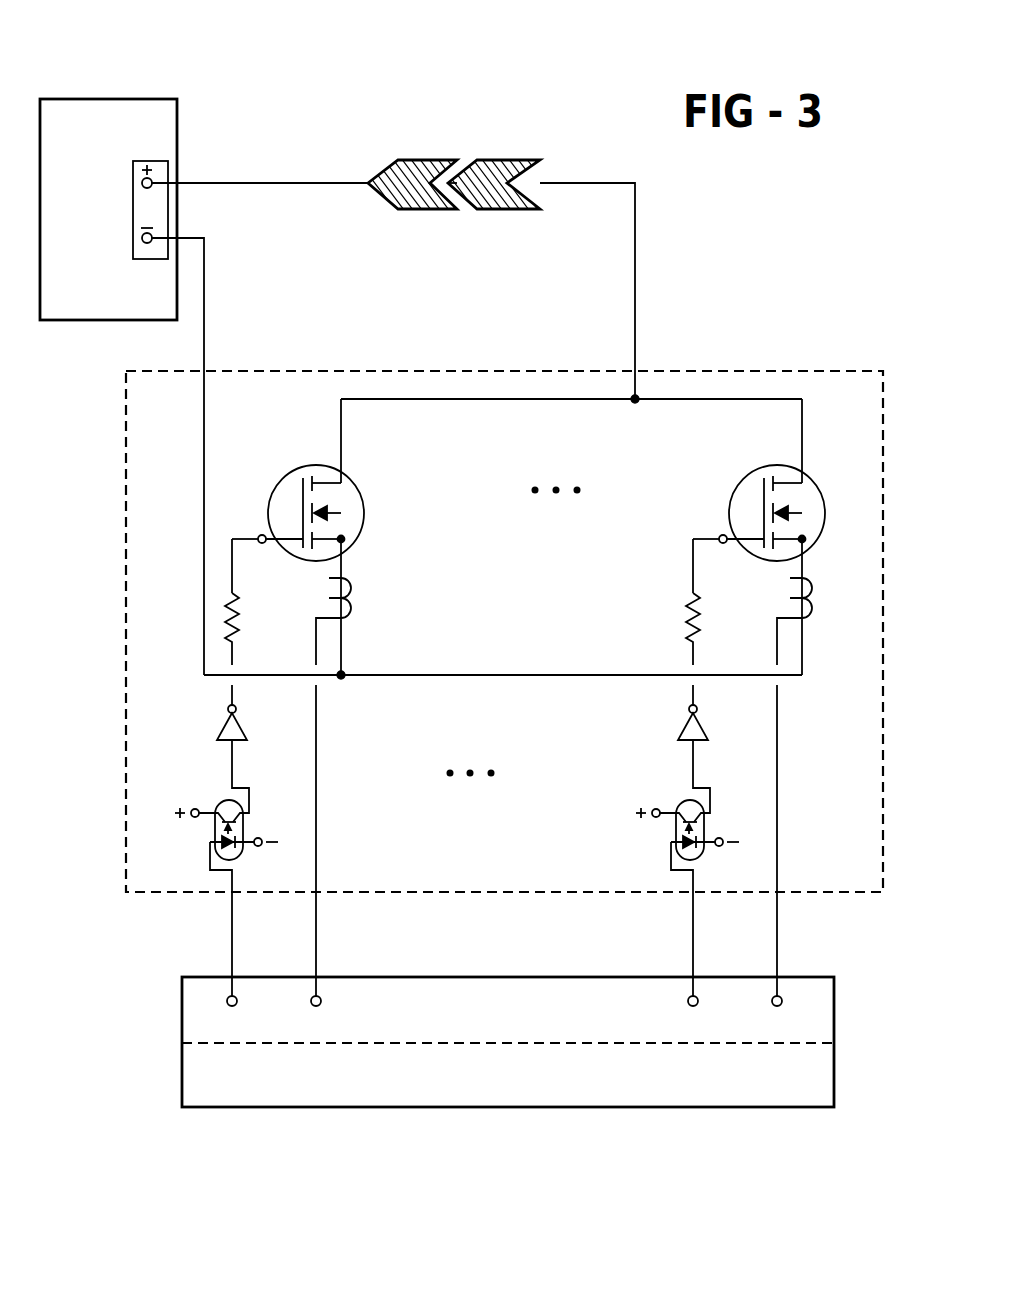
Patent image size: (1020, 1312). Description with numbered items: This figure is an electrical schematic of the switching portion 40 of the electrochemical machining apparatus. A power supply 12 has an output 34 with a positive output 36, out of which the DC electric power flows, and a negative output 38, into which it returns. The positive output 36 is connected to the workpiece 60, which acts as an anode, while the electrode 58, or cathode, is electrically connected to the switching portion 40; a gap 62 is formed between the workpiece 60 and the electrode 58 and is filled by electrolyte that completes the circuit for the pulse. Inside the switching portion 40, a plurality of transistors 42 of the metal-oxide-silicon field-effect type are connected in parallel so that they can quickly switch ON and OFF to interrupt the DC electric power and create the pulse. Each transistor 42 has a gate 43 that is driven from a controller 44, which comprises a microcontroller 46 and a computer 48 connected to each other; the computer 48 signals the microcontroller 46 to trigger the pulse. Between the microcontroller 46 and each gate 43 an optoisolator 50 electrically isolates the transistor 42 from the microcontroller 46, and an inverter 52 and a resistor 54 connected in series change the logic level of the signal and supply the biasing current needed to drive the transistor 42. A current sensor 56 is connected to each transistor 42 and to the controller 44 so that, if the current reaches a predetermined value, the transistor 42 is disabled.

The power supply 12 is at (90, 99).
The output 34 is at (154, 161).
The positive output 36 is at (155, 180).
The negative output 38 is at (155, 237).
The switching portion 40 is at (812, 371).
The transistors 42 is at (361, 502).
The gate 43 is at (263, 534).
The controller 44 is at (180, 1091).
The microcontroller 46 is at (182, 1022).
The computer 48 is at (836, 1075).
The optoisolator 50 is at (221, 801).
The inverter 52 is at (240, 722).
The resistor 54 is at (239, 608).
The current sensors 56 is at (353, 590).
The electrode 58 is at (524, 160).
The workpiece 60 is at (437, 160).
The gap 62 is at (463, 165).